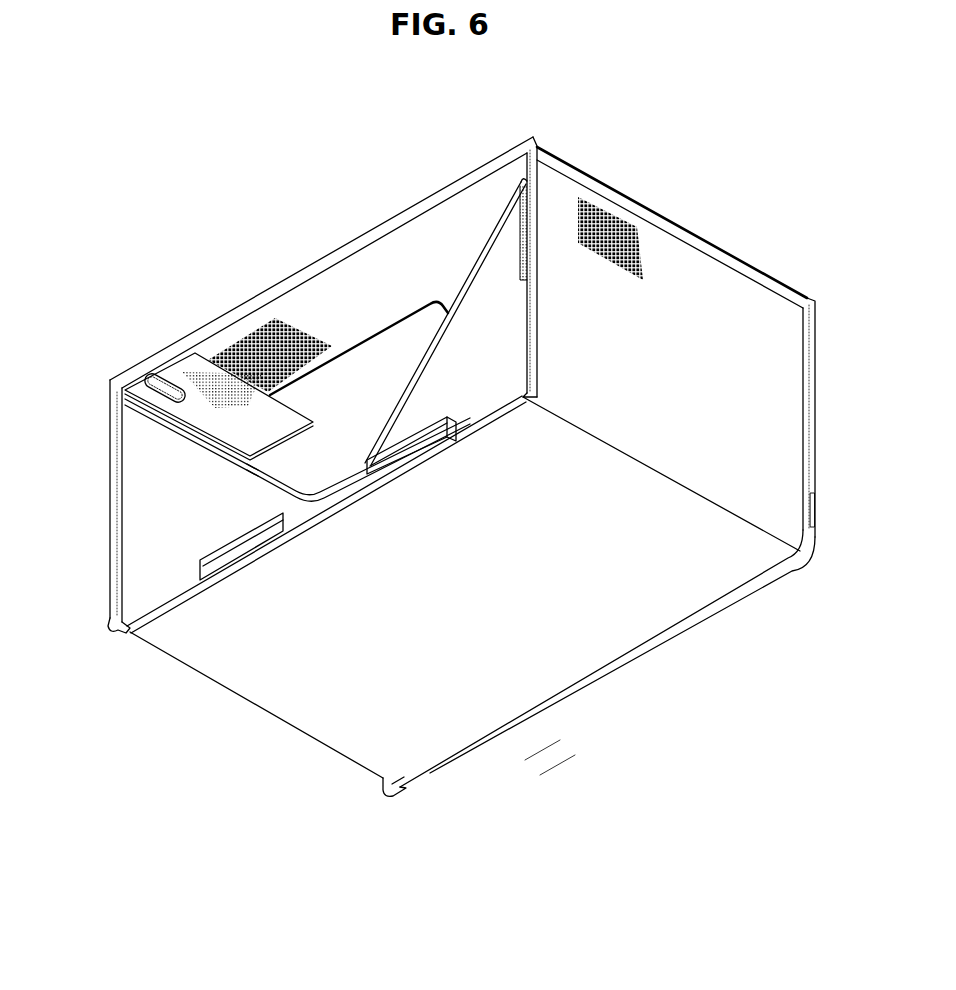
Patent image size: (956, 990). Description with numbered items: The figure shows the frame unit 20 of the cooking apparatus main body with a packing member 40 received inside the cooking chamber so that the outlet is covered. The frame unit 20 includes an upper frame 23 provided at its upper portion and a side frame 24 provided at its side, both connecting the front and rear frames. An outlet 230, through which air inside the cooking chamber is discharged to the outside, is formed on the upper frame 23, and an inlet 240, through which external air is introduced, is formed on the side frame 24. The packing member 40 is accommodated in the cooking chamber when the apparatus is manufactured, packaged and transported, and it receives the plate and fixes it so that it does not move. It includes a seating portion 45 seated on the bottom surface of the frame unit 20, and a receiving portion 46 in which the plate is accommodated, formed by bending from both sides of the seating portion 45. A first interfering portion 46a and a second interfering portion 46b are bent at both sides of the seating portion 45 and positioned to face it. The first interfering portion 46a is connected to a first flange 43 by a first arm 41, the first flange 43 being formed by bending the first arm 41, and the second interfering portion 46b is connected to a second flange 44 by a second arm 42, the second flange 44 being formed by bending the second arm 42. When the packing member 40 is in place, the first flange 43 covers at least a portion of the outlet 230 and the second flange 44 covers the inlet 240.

The frame unit 20 is at (360, 212).
The upper frame 23 is at (323, 258).
The side frame 24 is at (687, 270).
The outlet 230 is at (255, 330).
The inlet 240 is at (627, 218).
The packing member 40 is at (145, 424).
The first arm 41 is at (188, 446).
The second arm 42 is at (457, 288).
The first flange 43 is at (170, 378).
The second flange 44 is at (522, 220).
The seating portion 45 is at (295, 528).
The receiving portion 46 is at (326, 493).
The first interfering portion 46a is at (238, 540).
The second interfering portion 46b is at (433, 423).